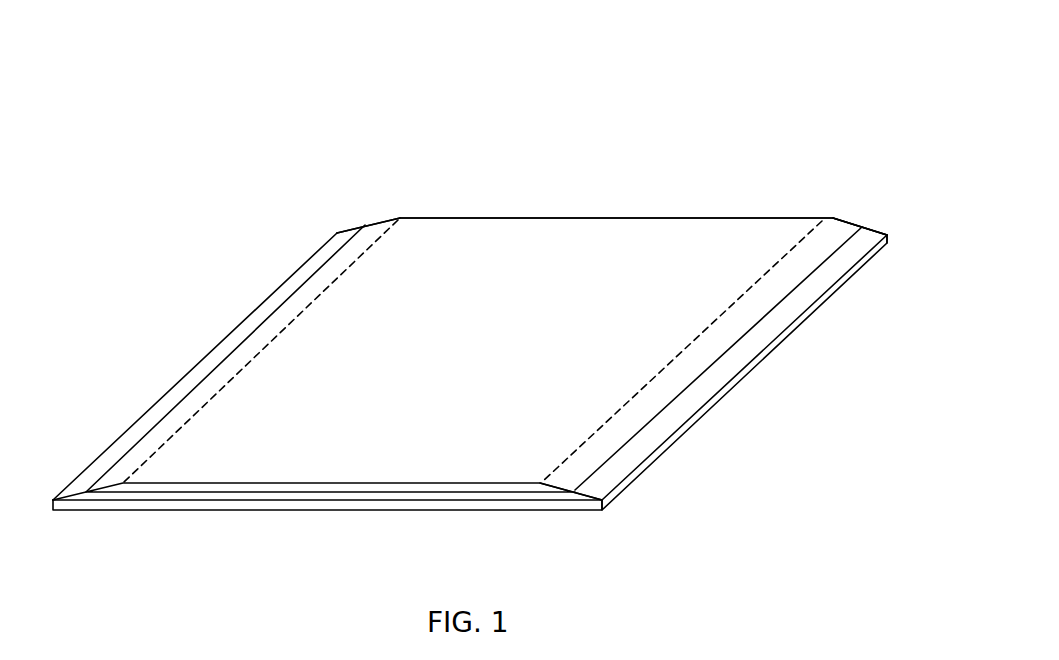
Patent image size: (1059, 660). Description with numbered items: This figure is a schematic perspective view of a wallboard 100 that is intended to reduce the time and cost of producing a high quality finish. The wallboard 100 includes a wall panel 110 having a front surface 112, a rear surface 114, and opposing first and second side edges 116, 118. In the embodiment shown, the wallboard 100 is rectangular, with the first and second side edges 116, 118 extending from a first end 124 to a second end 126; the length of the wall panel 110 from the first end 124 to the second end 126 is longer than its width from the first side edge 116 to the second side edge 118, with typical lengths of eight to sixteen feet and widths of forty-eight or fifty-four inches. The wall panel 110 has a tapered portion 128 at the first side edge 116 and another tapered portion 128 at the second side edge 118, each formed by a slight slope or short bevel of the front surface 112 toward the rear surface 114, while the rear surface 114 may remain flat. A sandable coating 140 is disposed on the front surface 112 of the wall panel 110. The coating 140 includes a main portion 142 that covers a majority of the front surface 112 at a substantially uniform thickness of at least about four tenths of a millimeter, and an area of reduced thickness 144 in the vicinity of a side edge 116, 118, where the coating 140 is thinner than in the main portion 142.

The wallboard 100 is at (673, 160).
The wall panel 110 is at (235, 500).
The front surface 112 is at (334, 490).
The rear surface 114 is at (392, 510).
The first side edge 116 is at (756, 389).
The second side edge 118 is at (193, 354).
The first end 124 is at (535, 519).
The second end 126 is at (832, 202).
The tapered portion 128 is at (322, 257).
The sandable coating 140 is at (457, 373).
The main portion 142 is at (405, 205).
The area of reduced thickness 144 is at (405, 205).